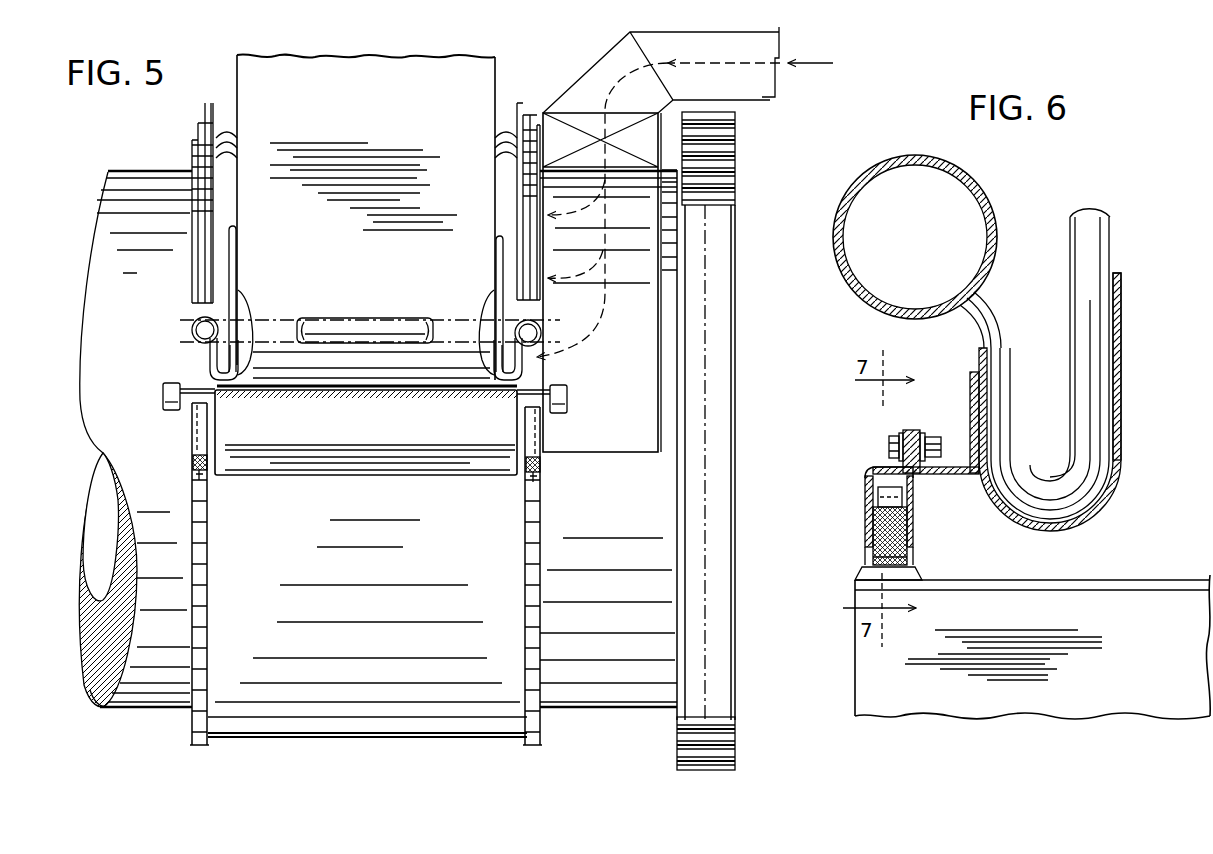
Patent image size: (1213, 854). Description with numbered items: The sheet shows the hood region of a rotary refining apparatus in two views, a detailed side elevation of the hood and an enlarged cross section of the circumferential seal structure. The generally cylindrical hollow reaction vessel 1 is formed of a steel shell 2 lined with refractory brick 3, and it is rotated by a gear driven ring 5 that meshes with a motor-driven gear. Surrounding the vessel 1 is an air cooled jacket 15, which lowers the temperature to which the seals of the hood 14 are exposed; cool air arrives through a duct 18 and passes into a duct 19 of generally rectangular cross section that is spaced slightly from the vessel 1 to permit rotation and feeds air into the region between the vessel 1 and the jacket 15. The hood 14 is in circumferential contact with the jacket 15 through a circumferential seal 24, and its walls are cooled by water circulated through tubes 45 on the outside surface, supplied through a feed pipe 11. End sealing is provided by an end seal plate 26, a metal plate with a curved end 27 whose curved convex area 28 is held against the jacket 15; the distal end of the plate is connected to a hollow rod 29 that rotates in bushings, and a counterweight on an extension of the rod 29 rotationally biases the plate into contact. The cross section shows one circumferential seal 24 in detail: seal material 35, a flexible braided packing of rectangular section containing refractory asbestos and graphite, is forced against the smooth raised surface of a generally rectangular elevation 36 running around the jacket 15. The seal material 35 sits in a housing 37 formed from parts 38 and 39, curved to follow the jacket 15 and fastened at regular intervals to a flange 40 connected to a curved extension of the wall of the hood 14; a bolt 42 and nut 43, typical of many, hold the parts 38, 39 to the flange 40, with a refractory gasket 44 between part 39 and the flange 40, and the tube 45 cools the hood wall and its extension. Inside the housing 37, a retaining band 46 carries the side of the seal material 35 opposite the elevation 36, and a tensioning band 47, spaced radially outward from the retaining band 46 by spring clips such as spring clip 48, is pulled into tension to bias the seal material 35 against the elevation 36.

In FIG. 5, the reaction vessel 1 is at (104, 168).
In FIG. 5, the steel shell 2 is at (102, 707).
In FIG. 5, the refractory brick 3 is at (96, 637).
In FIG. 5, the gear driven ring 5 is at (703, 127).
In FIG. 5, the feed pipe 11 is at (371, 315).
In FIG. 6, the feed pipe 11 is at (991, 191).
In FIG. 5, the hood 14 is at (499, 99).
In FIG. 5, the air cooled jacket 15 is at (190, 738).
In FIG. 6, the air cooled jacket 15 is at (1079, 579).
In FIG. 5, the duct 18 is at (777, 93).
In FIG. 5, the duct 19 is at (633, 278).
In FIG. 6, the circumferential seal 24 is at (864, 521).
In FIG. 5, the end seal plate 26 is at (290, 477).
In FIG. 5, the curved end 27 is at (382, 477).
In FIG. 5, the curved convex area 28 is at (437, 458).
In FIG. 5, the rod 29 is at (328, 393).
In FIG. 6, the seal material 35 is at (872, 557).
In FIG. 6, the elevation 36 is at (858, 572).
In FIG. 6, the housing 37 is at (860, 533).
In FIG. 6, the part 38 is at (900, 436).
In FIG. 6, the part 39 is at (912, 533).
In FIG. 6, the flange 40 is at (945, 473).
In FIG. 6, the bolt 42 is at (890, 450).
In FIG. 6, the nut 43 is at (931, 440).
In FIG. 6, the gasket 44 is at (912, 430).
In FIG. 6, the tube 45 is at (1098, 255).
In FIG. 6, the retaining band 46 is at (866, 510).
In FIG. 6, the tensioning band 47 is at (866, 478).
In FIG. 6, the spring clip 48 is at (868, 493).